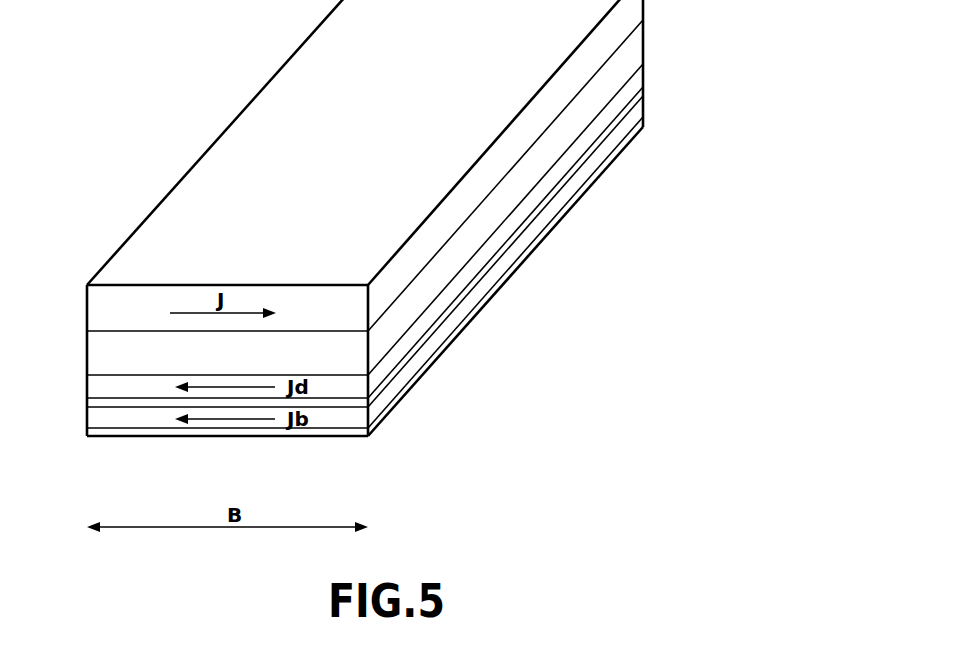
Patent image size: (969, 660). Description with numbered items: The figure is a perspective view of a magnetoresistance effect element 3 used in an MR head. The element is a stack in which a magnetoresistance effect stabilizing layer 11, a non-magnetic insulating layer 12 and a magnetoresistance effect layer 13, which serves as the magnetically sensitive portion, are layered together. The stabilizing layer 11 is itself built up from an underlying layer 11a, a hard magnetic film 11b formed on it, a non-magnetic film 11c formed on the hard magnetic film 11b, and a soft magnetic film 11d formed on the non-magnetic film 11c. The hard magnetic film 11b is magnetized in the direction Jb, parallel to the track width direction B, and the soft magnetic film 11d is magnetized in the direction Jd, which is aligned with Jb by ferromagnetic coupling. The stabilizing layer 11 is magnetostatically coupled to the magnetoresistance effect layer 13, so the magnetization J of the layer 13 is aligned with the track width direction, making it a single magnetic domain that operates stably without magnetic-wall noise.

The magnetoresistance effect element 3 is at (173, 121).
The magnetoresistance effect layer 13 is at (78, 288).
The non-magnetic insulating layer 12 is at (78, 334).
The magnetoresistance effect stabilizing layer 11 is at (336, 290).
The underlying layer 11a is at (215, 436).
The hard magnetic film 11b is at (268, 423).
The non-magnetic film 11c is at (340, 403).
The soft magnetic film 11d is at (349, 385).